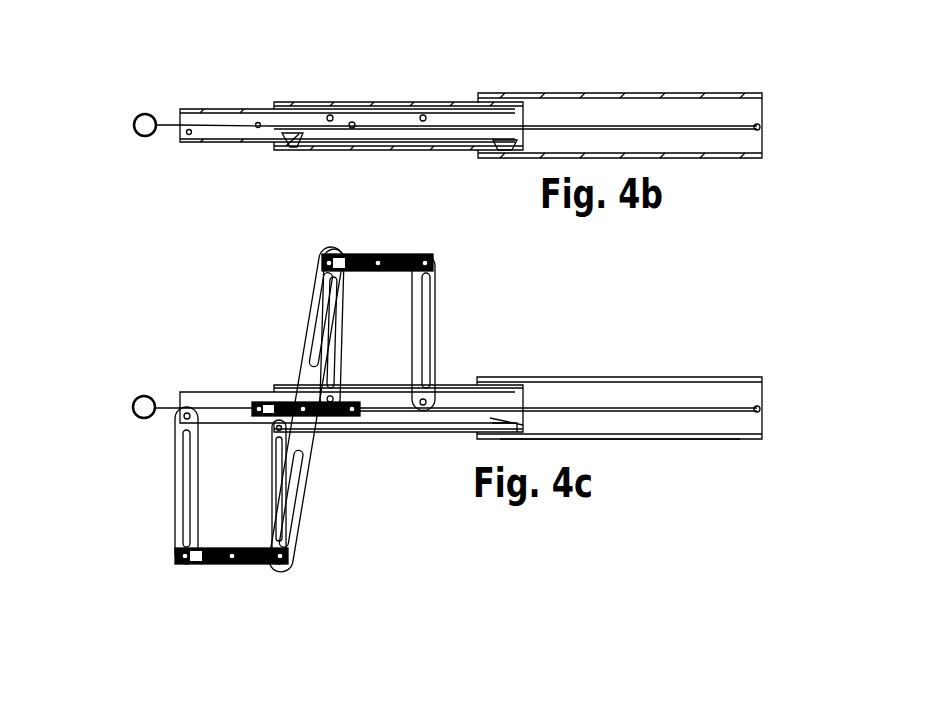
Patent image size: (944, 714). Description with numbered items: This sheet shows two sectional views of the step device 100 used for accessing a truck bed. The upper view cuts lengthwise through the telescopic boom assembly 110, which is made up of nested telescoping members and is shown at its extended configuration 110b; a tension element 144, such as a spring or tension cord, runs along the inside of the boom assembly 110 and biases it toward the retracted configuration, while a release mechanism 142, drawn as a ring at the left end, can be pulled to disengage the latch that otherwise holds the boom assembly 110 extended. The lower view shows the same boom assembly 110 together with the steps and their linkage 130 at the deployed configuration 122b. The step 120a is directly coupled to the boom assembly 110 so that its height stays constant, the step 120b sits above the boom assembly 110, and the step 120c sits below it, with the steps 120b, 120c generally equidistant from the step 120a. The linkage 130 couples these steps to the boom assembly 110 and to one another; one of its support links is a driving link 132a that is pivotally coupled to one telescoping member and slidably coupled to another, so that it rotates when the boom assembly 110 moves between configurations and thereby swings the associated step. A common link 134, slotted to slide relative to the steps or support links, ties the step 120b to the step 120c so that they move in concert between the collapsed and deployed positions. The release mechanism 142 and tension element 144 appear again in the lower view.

In FIG. 4C, the step device 100 is at (155, 325).
In FIG. 4B, the telescopic boom assembly 110 is at (680, 90).
In FIG. 4C, the telescopic boom assembly 110 is at (617, 375).
In FIG. 4C, the extended configuration 110b is at (633, 444).
In FIG. 4C, the step 120a is at (280, 400).
In FIG. 4C, the step 120b is at (365, 255).
In FIG. 4C, the step 120c is at (222, 565).
In FIG. 4C, the deployed configuration 122b is at (415, 250).
In FIG. 4C, the linkage 130 is at (302, 325).
In FIG. 4C, the driving link 132a is at (440, 327).
In FIG. 4C, the common link 134 is at (303, 493).
In FIG. 4C, the release mechanism 142 is at (132, 400).
In FIG. 4B, the tension element 144 is at (718, 130).
In FIG. 4C, the tension element 144 is at (703, 412).